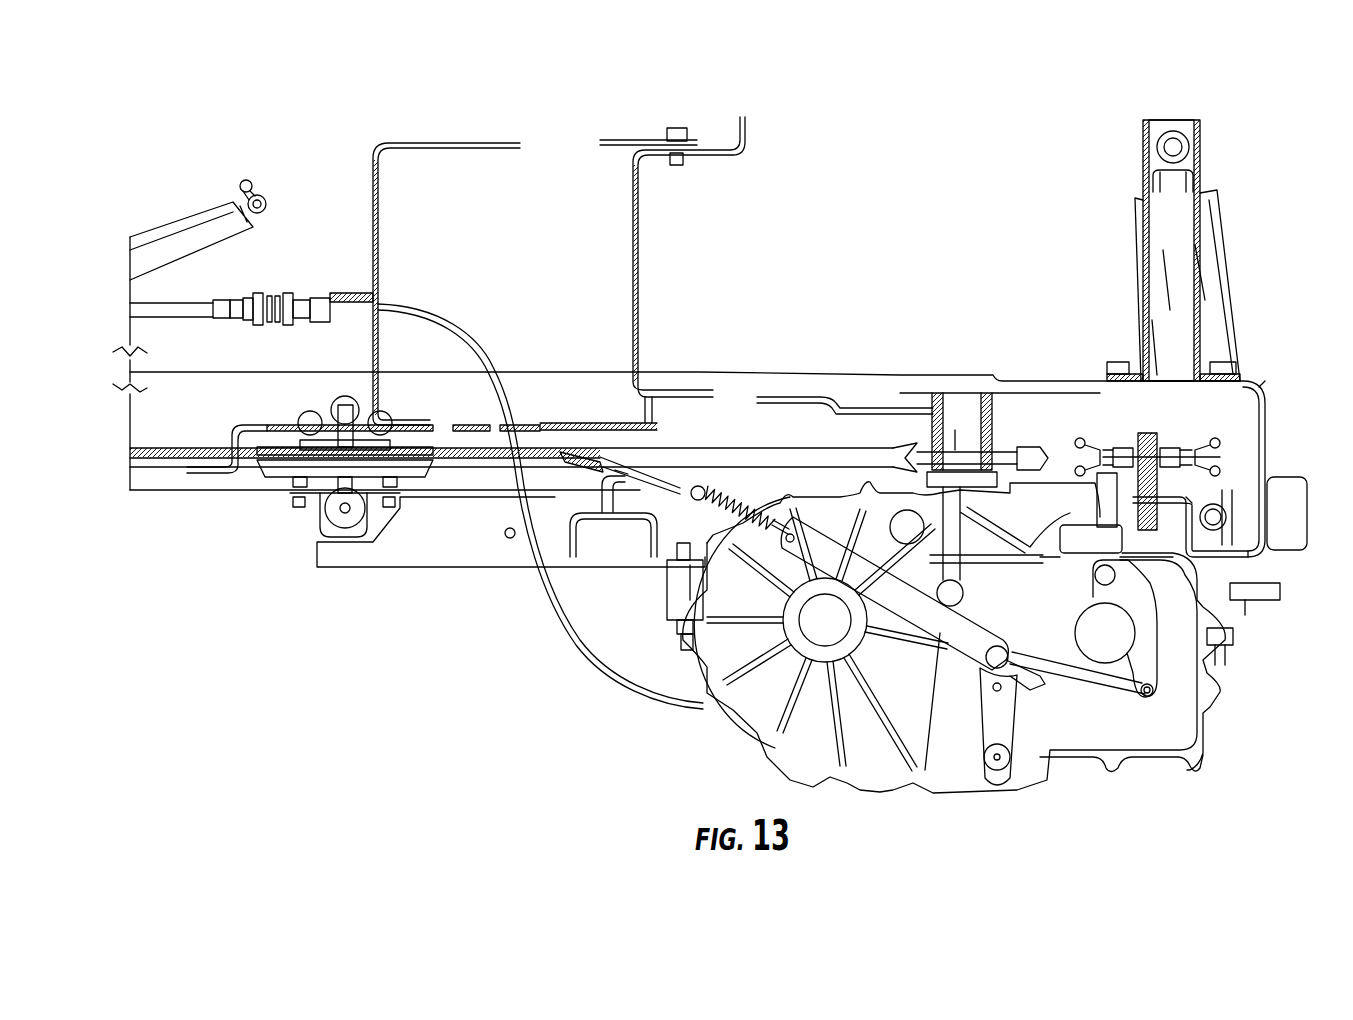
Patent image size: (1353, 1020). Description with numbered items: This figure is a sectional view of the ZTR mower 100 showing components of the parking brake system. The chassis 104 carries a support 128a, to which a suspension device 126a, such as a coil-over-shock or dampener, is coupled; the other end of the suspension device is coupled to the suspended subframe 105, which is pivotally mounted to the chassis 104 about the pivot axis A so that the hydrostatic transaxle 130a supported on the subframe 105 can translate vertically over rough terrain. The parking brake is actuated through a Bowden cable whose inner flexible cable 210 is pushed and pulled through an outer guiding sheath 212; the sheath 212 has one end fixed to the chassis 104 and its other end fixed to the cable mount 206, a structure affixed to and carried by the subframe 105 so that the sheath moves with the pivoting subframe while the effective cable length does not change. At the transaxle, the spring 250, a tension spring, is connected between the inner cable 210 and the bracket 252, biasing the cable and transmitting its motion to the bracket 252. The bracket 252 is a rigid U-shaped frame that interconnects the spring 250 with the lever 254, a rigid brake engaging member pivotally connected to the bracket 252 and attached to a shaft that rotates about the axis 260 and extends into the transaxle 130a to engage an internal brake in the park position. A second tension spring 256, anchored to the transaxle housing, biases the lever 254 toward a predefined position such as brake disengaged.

The ZTR mower 100 is at (230, 135).
The chassis 104 is at (145, 387).
The suspended subframe 105 is at (393, 557).
The pivot axis A is at (340, 510).
The suspension device 126a is at (1234, 295).
The support 128a is at (1200, 148).
The hydrostatic transaxle 130a is at (1200, 738).
The cable mount 206 is at (552, 505).
The inner flexible cable 210 is at (607, 503).
The outer guiding sheath 212 is at (490, 458).
The spring 250 is at (693, 498).
The bracket 252 is at (905, 622).
The lever 254 is at (985, 720).
The spring 256 is at (1097, 682).
The axis 260 is at (1000, 760).